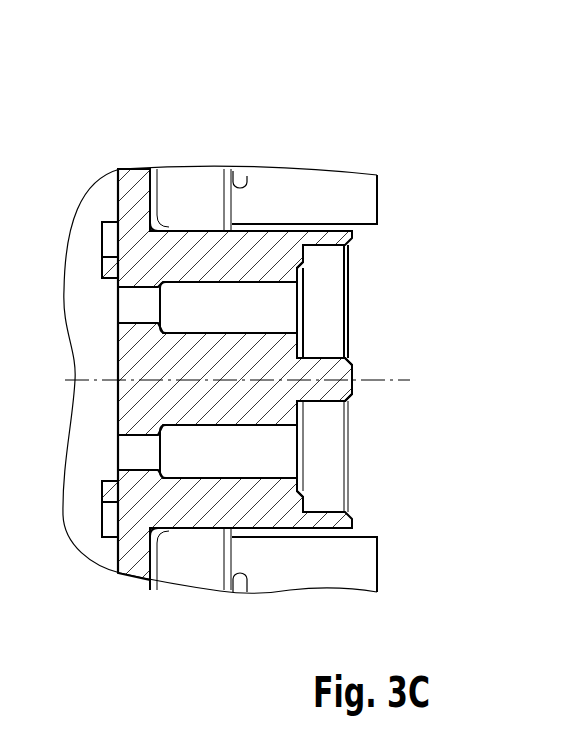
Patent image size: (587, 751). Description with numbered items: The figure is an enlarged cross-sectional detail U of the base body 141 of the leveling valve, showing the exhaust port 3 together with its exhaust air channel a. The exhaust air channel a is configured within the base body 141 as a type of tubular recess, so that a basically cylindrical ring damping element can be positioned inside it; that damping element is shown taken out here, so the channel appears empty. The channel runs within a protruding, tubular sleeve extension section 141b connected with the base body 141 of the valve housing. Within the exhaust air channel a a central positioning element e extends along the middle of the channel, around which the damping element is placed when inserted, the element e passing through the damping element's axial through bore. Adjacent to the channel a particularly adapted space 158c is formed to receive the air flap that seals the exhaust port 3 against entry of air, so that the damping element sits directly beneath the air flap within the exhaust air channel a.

The base body 141 is at (131, 181).
The tubular sleeve extension section 141b is at (197, 501).
The space 158c is at (333, 298).
The exhaust port 3 is at (243, 302).
The exhaust air channel a is at (262, 462).
The central positioning element e is at (220, 400).
The detail U is at (219, 117).